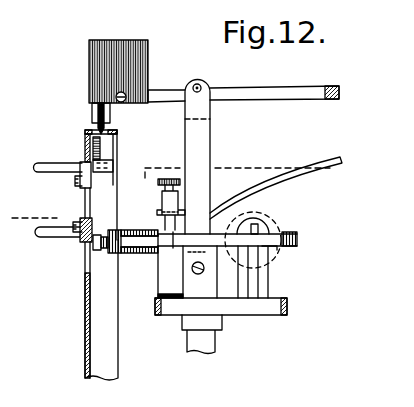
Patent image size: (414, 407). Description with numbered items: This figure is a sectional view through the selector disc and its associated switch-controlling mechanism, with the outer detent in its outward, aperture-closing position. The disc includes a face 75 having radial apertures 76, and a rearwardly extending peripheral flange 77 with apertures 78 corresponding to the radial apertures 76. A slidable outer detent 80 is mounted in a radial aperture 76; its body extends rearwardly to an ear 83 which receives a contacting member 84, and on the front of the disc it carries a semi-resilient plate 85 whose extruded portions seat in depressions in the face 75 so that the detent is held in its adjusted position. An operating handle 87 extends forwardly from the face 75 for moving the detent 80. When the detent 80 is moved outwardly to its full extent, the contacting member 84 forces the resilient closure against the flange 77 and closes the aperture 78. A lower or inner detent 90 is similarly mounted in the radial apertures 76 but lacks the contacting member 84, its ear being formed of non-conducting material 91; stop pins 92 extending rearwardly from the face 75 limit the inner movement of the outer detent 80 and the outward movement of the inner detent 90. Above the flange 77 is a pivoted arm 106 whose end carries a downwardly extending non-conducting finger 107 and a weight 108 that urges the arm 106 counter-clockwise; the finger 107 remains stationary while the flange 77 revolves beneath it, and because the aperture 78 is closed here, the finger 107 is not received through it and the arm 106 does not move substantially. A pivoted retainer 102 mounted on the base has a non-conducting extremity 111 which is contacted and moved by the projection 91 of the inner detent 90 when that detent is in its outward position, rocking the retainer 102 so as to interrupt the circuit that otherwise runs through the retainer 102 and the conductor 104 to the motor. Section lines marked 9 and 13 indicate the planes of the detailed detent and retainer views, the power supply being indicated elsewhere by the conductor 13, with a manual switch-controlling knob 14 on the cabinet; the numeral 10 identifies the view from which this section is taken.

The machine 10 is at (106, 2).
The weight 108 is at (102, 72).
The pivoted arm 106 is at (260, 94).
The non-conducting finger 107 is at (108, 113).
The peripheral flange 77 is at (112, 131).
The aperture 78 is at (91, 131).
The semi-resilient plate 85 is at (83, 162).
The contacting member 84 is at (100, 147).
The ear 83 is at (113, 166).
The operating handle 87 is at (50, 164).
The outer detent 80 is at (88, 181).
The stop pin 92 is at (93, 218).
The lower detent 90 is at (46, 234).
The radial aperture 76 is at (86, 268).
The face 75 is at (83, 308).
The non-conducting material 91 is at (101, 251).
The non-conducting extremity 111 is at (150, 251).
The pivoted retainer 102 is at (298, 238).
The manual switch-controlling knob 14 is at (272, 225).
The conductor 104 is at (290, 174).
The section line 9- 9 is at (22, 147).
The conductor 13 is at (363, 170).